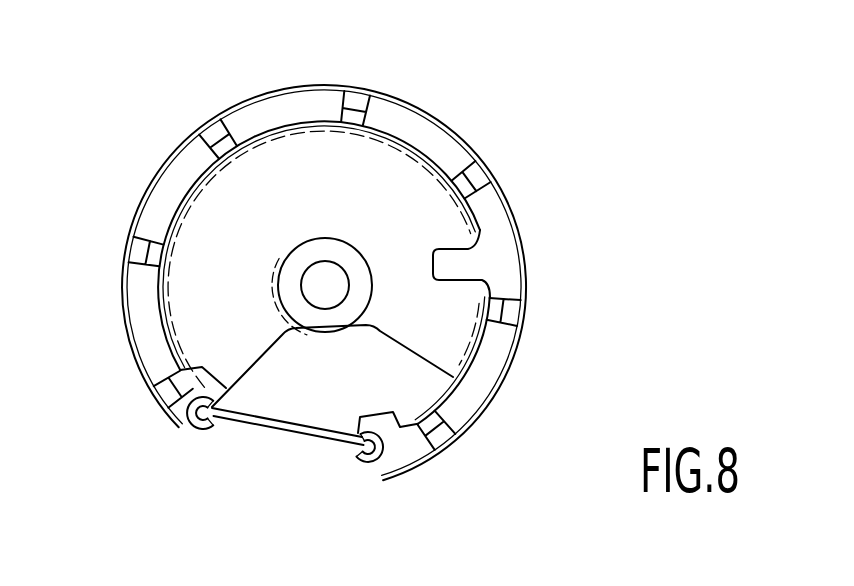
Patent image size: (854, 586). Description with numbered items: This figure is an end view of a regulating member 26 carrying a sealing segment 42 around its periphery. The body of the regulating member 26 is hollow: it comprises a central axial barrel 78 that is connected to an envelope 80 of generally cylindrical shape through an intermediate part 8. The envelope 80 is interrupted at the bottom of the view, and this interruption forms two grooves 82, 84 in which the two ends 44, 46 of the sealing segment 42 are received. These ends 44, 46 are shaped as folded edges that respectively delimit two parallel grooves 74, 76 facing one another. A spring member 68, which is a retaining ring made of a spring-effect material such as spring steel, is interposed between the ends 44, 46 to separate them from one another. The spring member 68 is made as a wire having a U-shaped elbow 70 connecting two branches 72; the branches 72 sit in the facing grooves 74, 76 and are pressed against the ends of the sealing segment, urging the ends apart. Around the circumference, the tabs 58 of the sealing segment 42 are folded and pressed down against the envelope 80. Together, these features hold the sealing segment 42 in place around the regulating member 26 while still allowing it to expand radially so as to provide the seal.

The intermediate part 8 is at (203, 257).
The regulating member 26 is at (191, 192).
The sealing segment 42 is at (526, 244).
The end of the sealing segment 44 is at (204, 432).
The end of the sealing segment 46 is at (358, 472).
The tabs 58 is at (357, 100).
The spring member 68 is at (267, 457).
The U-shaped elbow 70 is at (307, 428).
The branches 72 is at (216, 430).
The groove 74 is at (216, 428).
The groove 76 is at (356, 475).
The axial barrel 78 is at (340, 318).
The envelope 80 is at (279, 103).
The groove 82 is at (172, 410).
The groove 84 is at (407, 470).